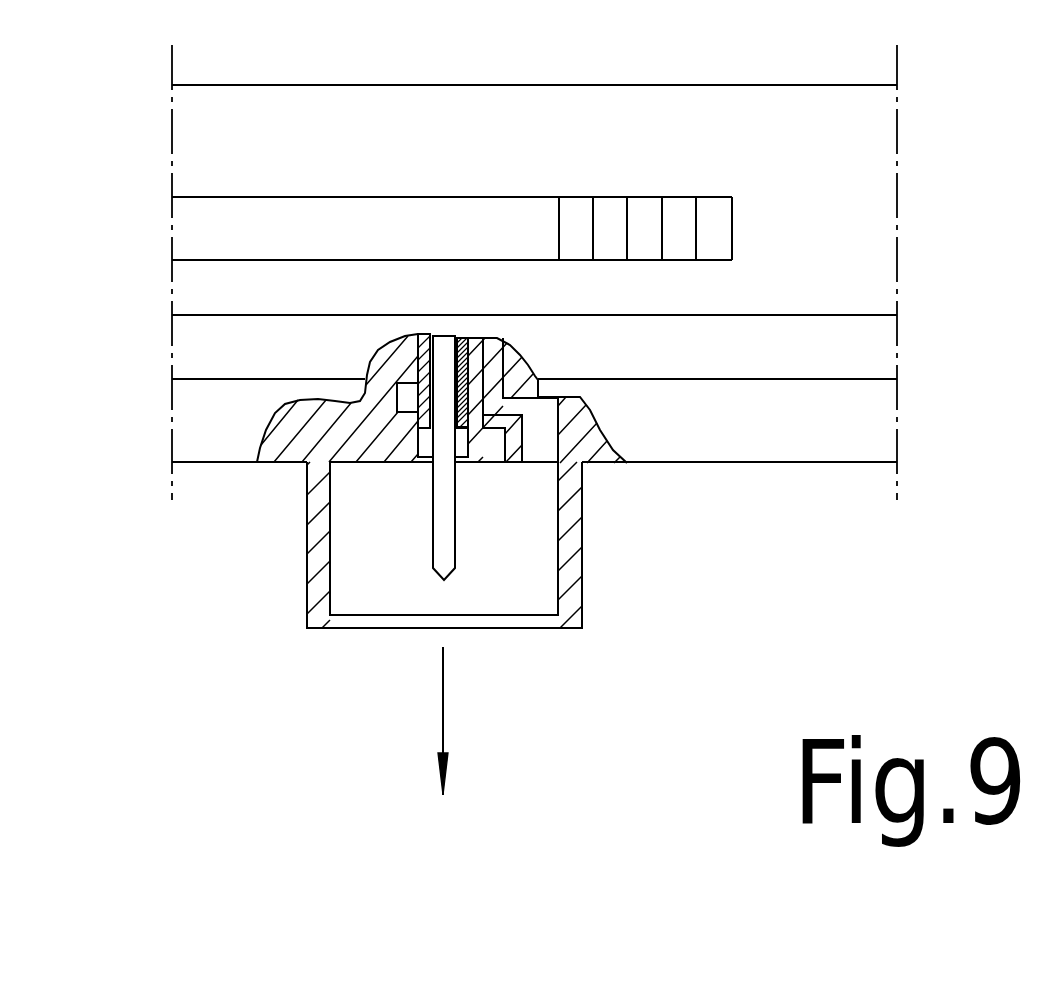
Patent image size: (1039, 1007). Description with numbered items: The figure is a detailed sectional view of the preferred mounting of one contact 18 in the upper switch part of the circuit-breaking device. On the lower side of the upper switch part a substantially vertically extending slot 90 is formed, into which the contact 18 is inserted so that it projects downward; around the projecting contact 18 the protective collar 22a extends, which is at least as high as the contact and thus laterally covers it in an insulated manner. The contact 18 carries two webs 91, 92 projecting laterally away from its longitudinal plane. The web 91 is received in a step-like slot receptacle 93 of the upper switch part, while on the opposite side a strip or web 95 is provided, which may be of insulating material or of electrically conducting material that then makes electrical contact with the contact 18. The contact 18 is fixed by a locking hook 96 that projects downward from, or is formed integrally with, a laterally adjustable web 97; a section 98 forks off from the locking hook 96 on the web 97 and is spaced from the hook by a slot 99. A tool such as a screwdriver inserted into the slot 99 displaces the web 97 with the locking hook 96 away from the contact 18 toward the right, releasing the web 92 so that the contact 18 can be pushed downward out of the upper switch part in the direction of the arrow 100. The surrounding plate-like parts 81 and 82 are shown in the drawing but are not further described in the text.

The contact 18 is at (440, 528).
The protective collar 22a is at (582, 523).
The upper plate 81 is at (505, 222).
The lower plate 82 is at (787, 328).
The slot 90 is at (432, 362).
The web 91 is at (432, 442).
The web 92 is at (458, 442).
The step-like slot receptacle 93 is at (415, 410).
The web 95 is at (453, 336).
The locking hook 96 is at (490, 460).
The web 97 is at (483, 381).
The section 98 is at (525, 423).
The slot 99 is at (505, 445).
The arrow 100 is at (442, 754).